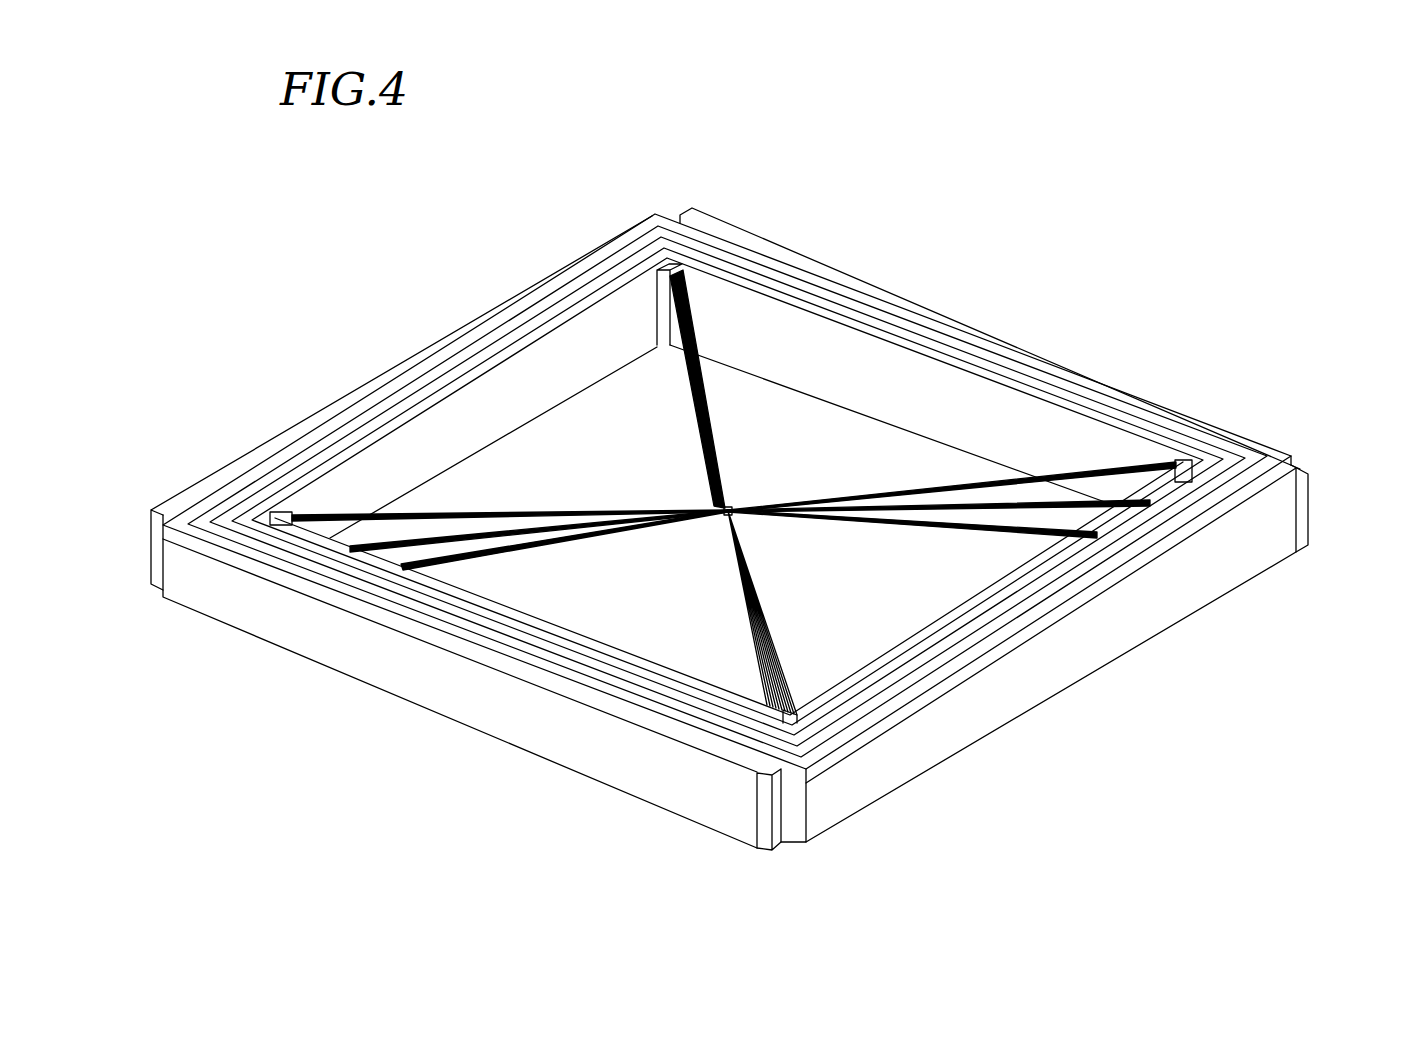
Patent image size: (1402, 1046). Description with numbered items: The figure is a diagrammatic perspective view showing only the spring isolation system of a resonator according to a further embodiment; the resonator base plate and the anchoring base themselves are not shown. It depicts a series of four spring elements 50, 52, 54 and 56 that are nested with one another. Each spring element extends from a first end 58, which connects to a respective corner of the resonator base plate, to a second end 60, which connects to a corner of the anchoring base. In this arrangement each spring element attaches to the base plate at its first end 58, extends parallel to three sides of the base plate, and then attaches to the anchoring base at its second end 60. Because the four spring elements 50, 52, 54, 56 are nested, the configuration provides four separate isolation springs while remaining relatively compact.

The spring element 50 is at (610, 723).
The spring element 52 is at (688, 725).
The spring element 54 is at (763, 732).
The spring element 56 is at (840, 707).
The first ends 58 is at (667, 268).
The second end 60 is at (720, 224).